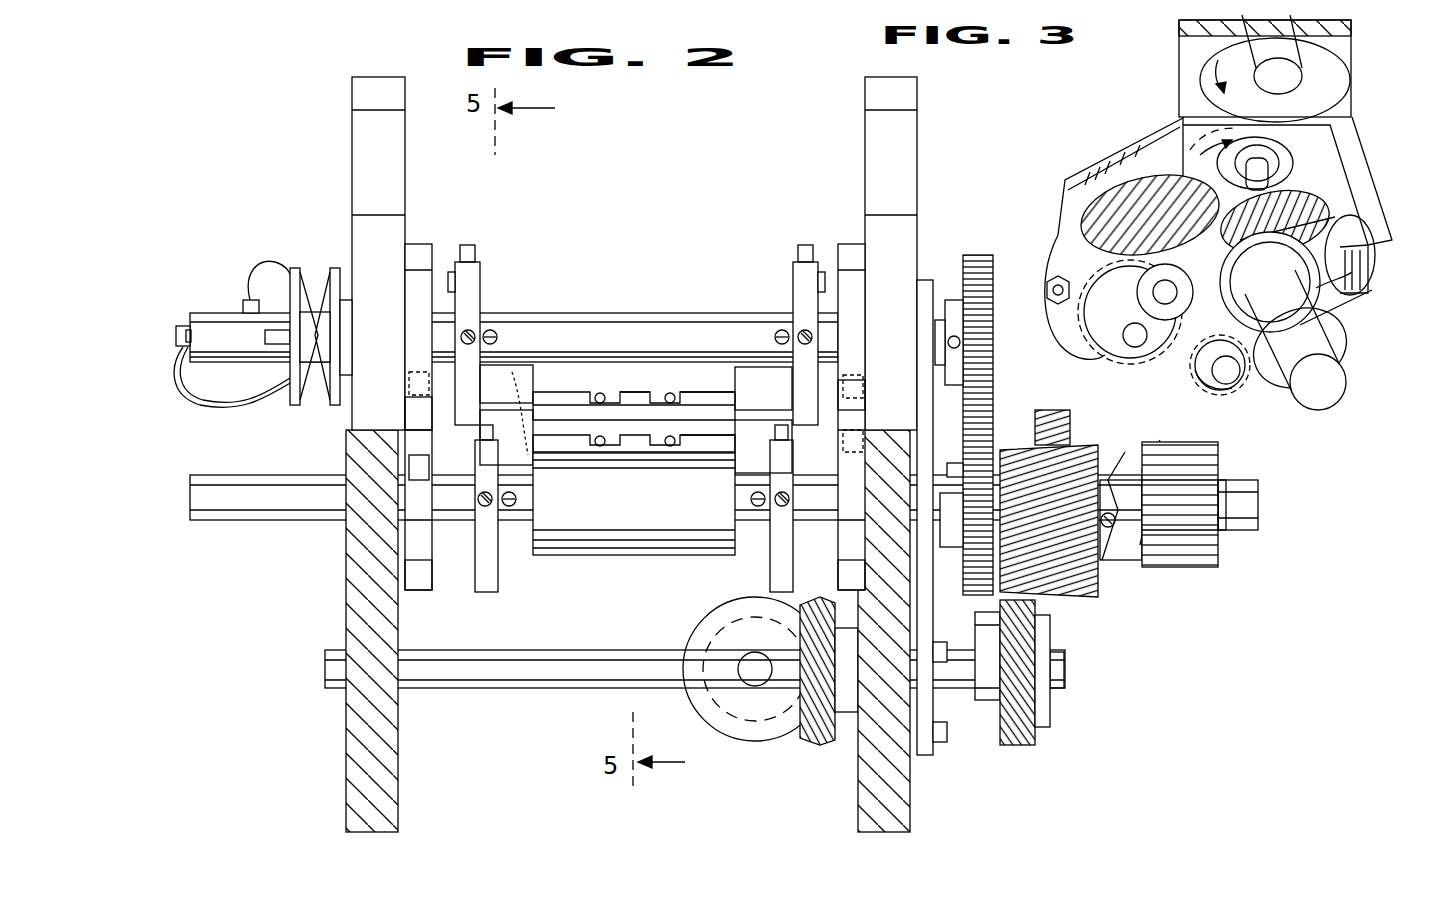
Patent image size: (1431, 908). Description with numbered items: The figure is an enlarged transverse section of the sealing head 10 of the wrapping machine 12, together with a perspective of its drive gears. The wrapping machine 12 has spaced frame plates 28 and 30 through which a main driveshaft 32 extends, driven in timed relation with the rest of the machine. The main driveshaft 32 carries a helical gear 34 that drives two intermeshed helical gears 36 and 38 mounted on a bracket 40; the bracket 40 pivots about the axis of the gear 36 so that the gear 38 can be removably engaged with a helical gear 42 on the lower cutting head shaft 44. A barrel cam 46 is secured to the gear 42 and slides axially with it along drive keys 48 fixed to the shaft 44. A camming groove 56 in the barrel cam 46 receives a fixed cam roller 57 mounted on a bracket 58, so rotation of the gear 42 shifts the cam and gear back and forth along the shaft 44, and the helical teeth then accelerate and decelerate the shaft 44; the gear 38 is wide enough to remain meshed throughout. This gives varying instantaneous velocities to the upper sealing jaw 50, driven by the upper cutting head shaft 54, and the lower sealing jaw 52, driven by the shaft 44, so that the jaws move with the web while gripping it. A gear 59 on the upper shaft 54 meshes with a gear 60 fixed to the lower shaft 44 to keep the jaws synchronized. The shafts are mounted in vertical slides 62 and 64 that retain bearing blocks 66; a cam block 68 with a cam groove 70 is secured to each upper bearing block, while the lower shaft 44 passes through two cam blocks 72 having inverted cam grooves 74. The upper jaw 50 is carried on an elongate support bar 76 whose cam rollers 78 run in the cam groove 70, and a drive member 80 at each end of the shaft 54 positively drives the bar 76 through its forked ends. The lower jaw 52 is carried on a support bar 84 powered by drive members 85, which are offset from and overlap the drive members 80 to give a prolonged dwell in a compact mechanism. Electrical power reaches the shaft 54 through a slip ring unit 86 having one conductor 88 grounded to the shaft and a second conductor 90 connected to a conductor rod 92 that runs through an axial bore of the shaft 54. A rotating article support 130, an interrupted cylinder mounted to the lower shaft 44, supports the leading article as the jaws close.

In FIG. 2, the sealing head 10 is at (236, 156).
In FIG. 2, the wrapping machine 12 is at (338, 776).
In FIG. 2, the frame plate 28 is at (354, 728).
In FIG. 2, the frame plate 30 is at (910, 788).
In FIG. 3, the frame plate 30 is at (1097, 163).
In FIG. 2, the main driveshaft 32 is at (613, 655).
In FIG. 3, the main driveshaft 32 is at (1235, 384).
In FIG. 2, the helical gear 34 is at (1035, 744).
In FIG. 3, the helical gear 34 is at (1185, 376).
In FIG. 2, the helical gear 36 is at (1040, 634).
In FIG. 3, the helical gear 36 is at (1100, 362).
In FIG. 2, the helical gear 38 is at (1098, 598).
In FIG. 3, the helical gear 38 is at (1110, 210).
In FIG. 2, the bracket 40 is at (935, 706).
In FIG. 3, the bracket 40 is at (1075, 240).
In FIG. 2, the helical gear 42 is at (1048, 417).
In FIG. 3, the helical gear 42 is at (1290, 194).
In FIG. 2, the lower cutting head shaft 44 is at (206, 476).
In FIG. 3, the lower cutting head shaft 44 is at (1330, 390).
In FIG. 2, the barrel cam 46 is at (1218, 462).
In FIG. 3, the barrel cam 46 is at (1285, 290).
In FIG. 2, the drive keys 48 is at (1240, 482).
In FIG. 3, the drive keys 48 is at (1290, 392).
In FIG. 2, the sealing jaw 50 is at (566, 415).
In FIG. 2, the sealing jaw 52 is at (708, 432).
In FIG. 2, the upper cutting head shaft 54 is at (590, 320).
In FIG. 3, the upper cutting head shaft 54 is at (1292, 88).
In FIG. 2, the camming groove 56 is at (1134, 452).
In FIG. 3, the camming groove 56 is at (1360, 228).
In FIG. 2, the cam roller 57 is at (1174, 492).
In FIG. 3, the cam roller 57 is at (1318, 288).
In FIG. 2, the bracket 58 is at (1158, 470).
In FIG. 3, the bracket 58 is at (1340, 135).
In FIG. 2, the gear 59 is at (966, 268).
In FIG. 3, the gear 59 is at (1200, 68).
In FIG. 2, the gear 60 is at (963, 436).
In FIG. 3, the gear 60 is at (1196, 120).
In FIG. 2, the vertical slide 62 is at (344, 112).
In FIG. 2, the vertical slide 64 is at (857, 126).
In FIG. 3, the bearing block 66 is at (1345, 63).
In FIG. 2, the cam block 68 is at (419, 252).
In FIG. 2, the cam groove 70 is at (416, 372).
In FIG. 2, the cam block 72 is at (424, 588).
In FIG. 2, the cam groove 74 is at (416, 480).
In FIG. 2, the support bar 76 is at (665, 391).
In FIG. 2, the cam rollers 78 is at (405, 409).
In FIG. 2, the drive member 80 is at (470, 290).
In FIG. 2, the support bar 84 is at (632, 448).
In FIG. 2, the drive member 85 is at (495, 573).
In FIG. 2, the slip ring unit 86 is at (318, 266).
In FIG. 2, the conductor 88 is at (258, 263).
In FIG. 2, the conductor 90 is at (190, 380).
In FIG. 2, the conductor rod 92 is at (176, 334).
In FIG. 2, the article support 130 is at (600, 508).